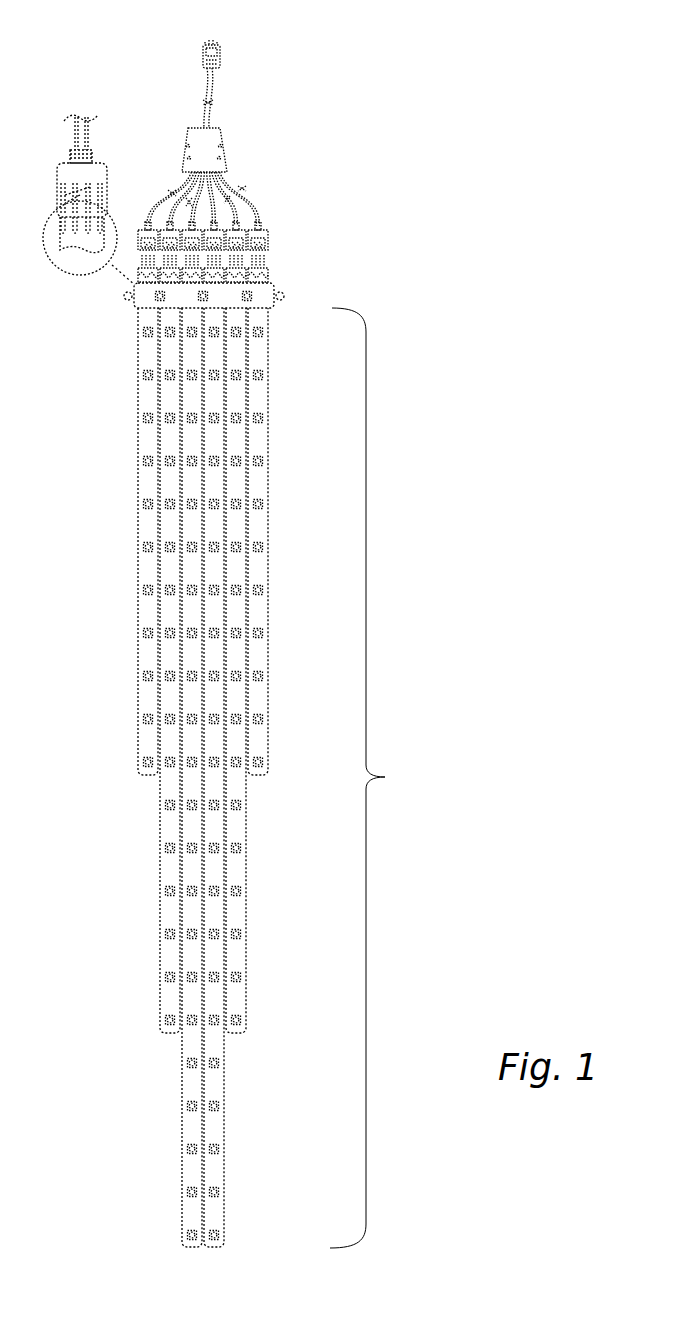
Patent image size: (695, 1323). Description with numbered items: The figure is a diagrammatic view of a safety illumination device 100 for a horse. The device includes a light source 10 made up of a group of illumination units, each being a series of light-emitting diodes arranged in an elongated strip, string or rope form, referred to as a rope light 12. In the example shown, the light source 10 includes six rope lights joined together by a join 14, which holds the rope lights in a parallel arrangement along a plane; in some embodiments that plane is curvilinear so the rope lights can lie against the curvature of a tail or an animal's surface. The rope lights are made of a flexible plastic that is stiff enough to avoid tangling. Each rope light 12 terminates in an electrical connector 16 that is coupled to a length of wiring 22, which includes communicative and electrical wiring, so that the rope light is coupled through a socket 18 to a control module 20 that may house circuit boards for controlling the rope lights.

The safety illumination device 100 is at (402, 127).
The light source 10 is at (244, 700).
The rope light 12 is at (147, 775).
The join 14 is at (263, 294).
The electrical connector 16 is at (266, 278).
The socket 18 is at (267, 238).
The control module 20 is at (222, 147).
The wiring 22 is at (180, 180).